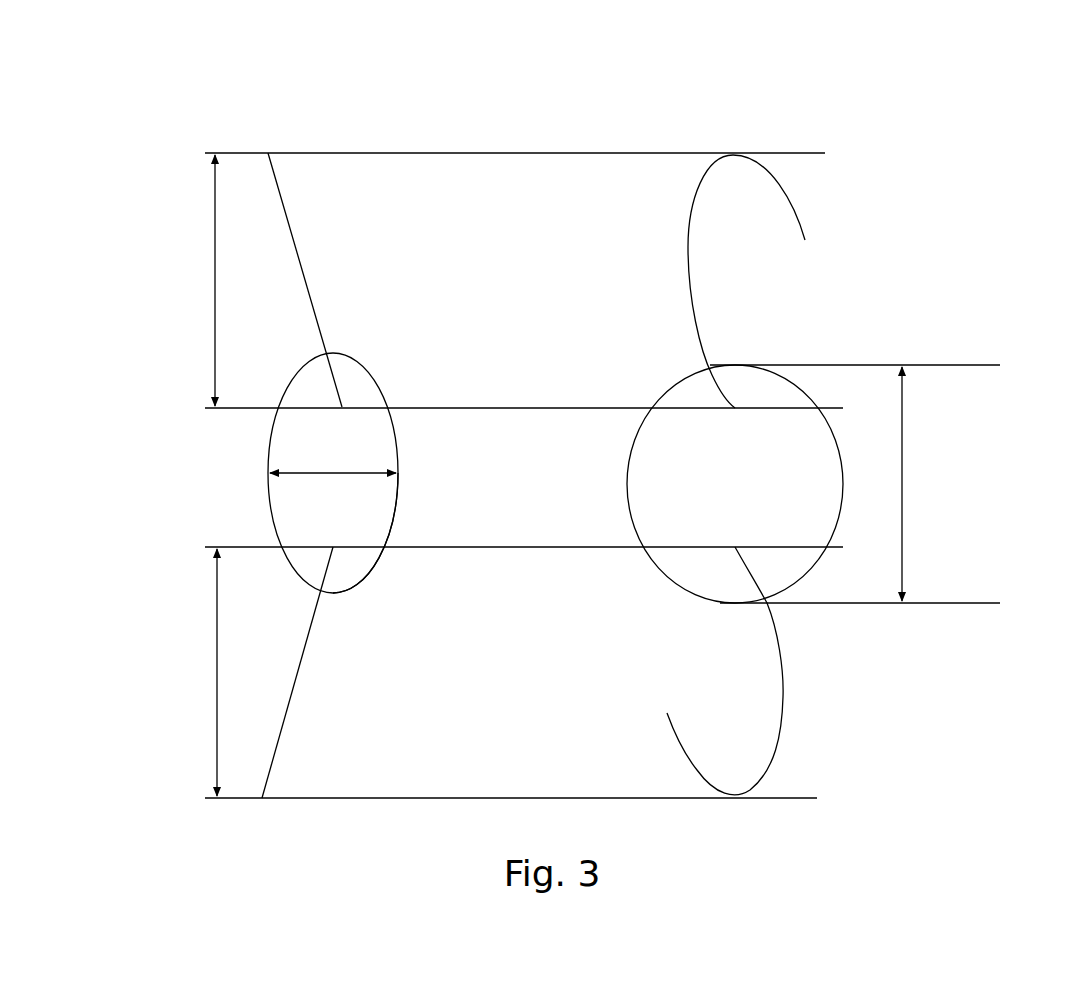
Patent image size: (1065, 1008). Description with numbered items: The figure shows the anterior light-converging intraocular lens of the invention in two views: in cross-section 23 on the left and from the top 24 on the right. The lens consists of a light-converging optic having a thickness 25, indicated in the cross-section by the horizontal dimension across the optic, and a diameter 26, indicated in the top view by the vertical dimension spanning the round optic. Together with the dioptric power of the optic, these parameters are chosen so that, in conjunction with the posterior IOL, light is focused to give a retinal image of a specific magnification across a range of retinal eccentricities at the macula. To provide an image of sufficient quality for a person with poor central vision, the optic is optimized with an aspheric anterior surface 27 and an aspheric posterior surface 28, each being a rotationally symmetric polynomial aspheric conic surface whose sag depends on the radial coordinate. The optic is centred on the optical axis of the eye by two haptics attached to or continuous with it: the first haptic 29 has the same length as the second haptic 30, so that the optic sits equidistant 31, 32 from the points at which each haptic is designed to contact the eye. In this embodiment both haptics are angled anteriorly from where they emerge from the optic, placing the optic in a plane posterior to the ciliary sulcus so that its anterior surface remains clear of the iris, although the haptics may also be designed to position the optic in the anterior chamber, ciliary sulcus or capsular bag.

The cross-section view of anterior light-converging IOL 23 is at (302, 410).
The top view of anterior light-converging IOL 24 is at (735, 409).
The thickness 25 is at (337, 469).
The diameter 26 is at (905, 490).
The aspheric anterior surface 27 is at (270, 432).
The aspheric posterior surface 28 is at (397, 509).
The first haptic 29 is at (308, 282).
The second haptic 30 is at (307, 655).
The equidistant spacing (first haptic side) 31 is at (212, 300).
The equidistant spacing (second haptic side) 32 is at (214, 638).